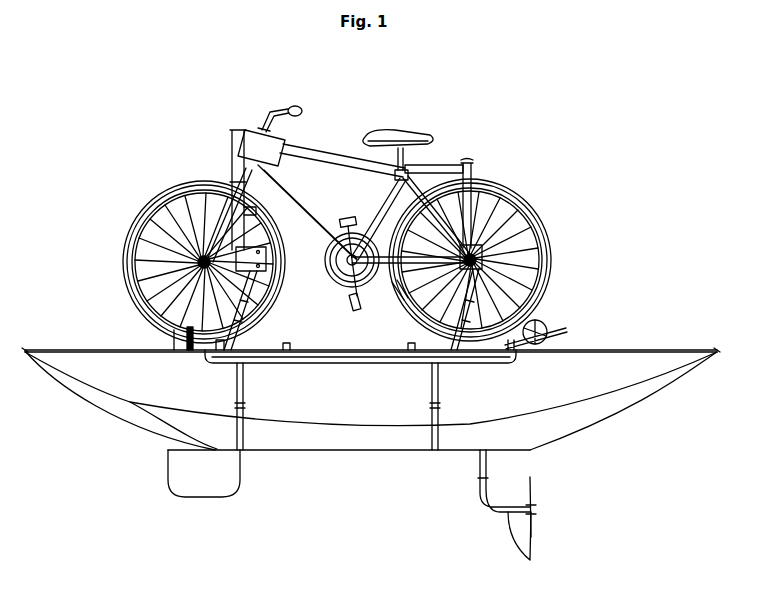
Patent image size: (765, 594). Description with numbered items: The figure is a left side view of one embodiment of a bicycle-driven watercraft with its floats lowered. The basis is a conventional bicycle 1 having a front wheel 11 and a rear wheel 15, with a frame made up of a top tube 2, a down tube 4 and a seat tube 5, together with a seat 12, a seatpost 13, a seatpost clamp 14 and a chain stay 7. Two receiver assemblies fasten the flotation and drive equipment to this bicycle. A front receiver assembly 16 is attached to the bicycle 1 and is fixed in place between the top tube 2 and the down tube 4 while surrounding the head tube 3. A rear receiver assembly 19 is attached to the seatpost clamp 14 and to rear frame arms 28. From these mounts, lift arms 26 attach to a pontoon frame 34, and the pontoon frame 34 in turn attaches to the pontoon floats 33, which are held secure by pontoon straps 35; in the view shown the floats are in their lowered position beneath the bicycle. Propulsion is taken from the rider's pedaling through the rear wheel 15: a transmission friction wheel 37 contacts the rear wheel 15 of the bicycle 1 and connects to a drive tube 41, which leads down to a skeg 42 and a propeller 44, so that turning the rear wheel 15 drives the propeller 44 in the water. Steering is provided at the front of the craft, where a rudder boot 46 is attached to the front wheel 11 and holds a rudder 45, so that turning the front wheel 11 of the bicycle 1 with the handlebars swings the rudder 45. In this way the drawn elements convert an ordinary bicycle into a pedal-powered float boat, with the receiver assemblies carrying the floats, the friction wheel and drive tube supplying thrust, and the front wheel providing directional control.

The bicycle 1 is at (345, 212).
The top tube 2 is at (300, 150).
The head tube 3 is at (260, 128).
The down tube 4 is at (300, 195).
The seat tube 5 is at (370, 205).
The chain stay 7 is at (393, 283).
The front wheel 11 is at (150, 210).
The seat 12 is at (405, 130).
The seatpost 13 is at (408, 152).
The seatpost clamp 14 is at (398, 155).
The rear wheel 15 is at (535, 222).
The front receiver assembly 16 is at (247, 153).
The rear receiver assembly 19 is at (455, 165).
The lift arms 26 is at (430, 325).
The rear frame arms 28 is at (478, 200).
The pontoon floats 33 is at (360, 400).
The pontoon frame 34 is at (320, 362).
The pontoon straps 35 is at (435, 438).
The transmission friction wheel 37 is at (548, 325).
The drive tube 41 is at (480, 478).
The skeg 42 is at (520, 535).
The propeller 44 is at (540, 520).
The rudder 45 is at (195, 466).
The rudder boot 46 is at (185, 345).